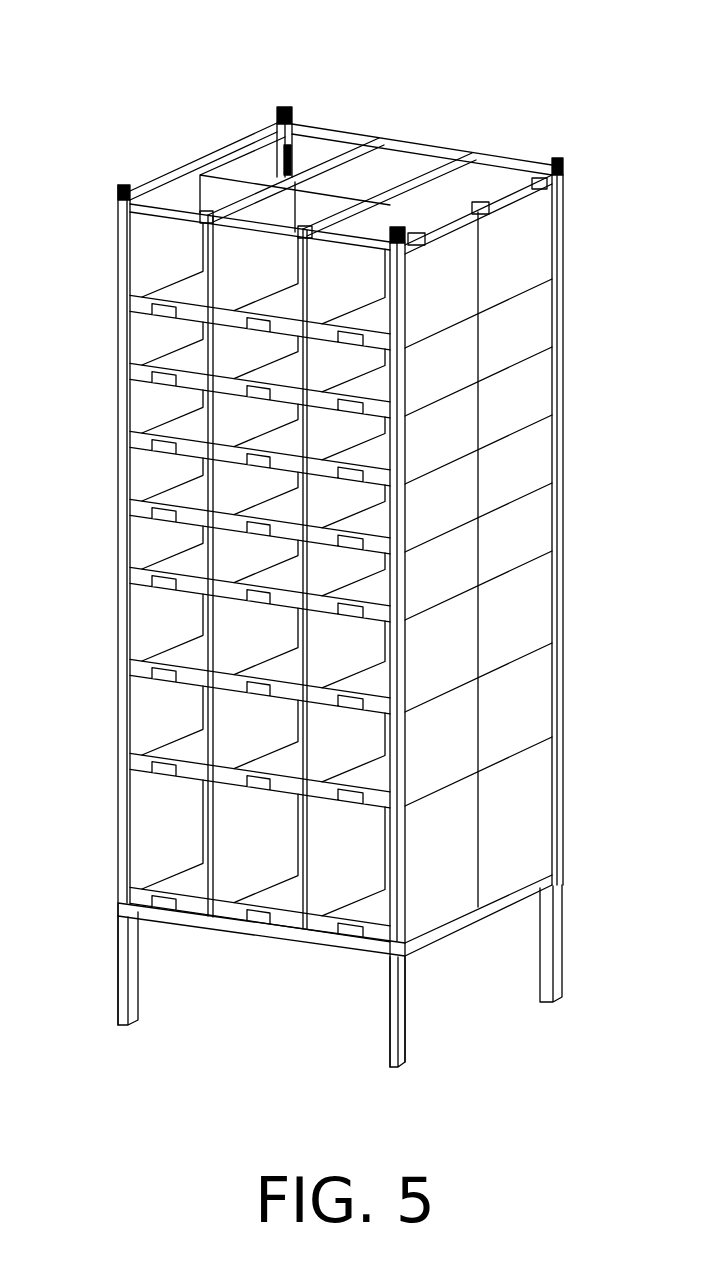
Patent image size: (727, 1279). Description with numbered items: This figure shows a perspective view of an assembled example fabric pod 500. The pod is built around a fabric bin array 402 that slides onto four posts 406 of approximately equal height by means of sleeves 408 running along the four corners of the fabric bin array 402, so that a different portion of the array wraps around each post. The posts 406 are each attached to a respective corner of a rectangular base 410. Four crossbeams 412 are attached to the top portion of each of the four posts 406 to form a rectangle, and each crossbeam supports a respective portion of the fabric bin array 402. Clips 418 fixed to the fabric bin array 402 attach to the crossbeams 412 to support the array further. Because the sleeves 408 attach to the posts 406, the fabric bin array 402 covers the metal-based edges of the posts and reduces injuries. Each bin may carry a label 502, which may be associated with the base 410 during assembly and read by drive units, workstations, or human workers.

The fabric pod 500 is at (175, 48).
The fabric bin array 402 is at (538, 452).
The posts 406 is at (118, 897).
The sleeves 408 is at (118, 885).
The base 410 is at (253, 935).
The crossbeams 412 is at (522, 183).
The clips 418 is at (566, 178).
The label 502 is at (132, 760).